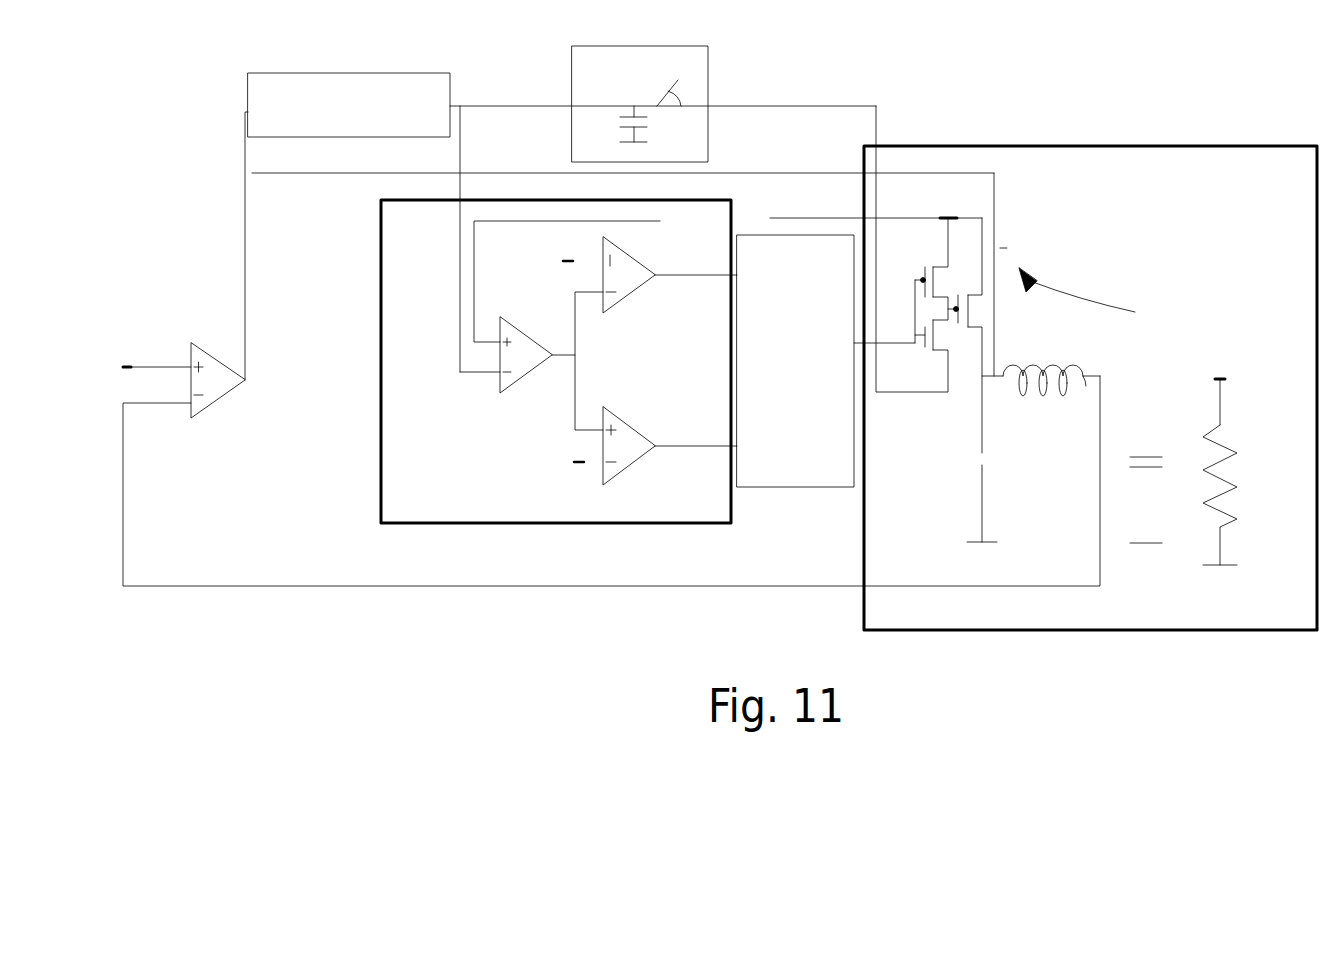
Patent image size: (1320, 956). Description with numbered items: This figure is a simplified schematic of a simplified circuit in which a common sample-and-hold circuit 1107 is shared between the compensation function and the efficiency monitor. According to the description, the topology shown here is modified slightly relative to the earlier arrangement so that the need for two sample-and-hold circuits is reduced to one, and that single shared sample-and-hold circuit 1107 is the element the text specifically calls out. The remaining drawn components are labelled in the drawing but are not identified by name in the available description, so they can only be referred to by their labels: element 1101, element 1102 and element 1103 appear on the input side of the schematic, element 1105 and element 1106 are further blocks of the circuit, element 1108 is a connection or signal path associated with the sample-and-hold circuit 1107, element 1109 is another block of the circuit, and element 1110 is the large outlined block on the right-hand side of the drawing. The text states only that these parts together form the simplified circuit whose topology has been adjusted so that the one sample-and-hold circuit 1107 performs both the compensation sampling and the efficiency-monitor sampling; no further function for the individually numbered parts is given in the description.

The reference voltage input 1101 is at (178, 366).
The feedback path 1102 is at (125, 452).
The operational amplifier 1103 is at (207, 350).
The window comparator block 1105 is at (410, 523).
The compensation block 1106 is at (313, 72).
The sample-and-hold circuit 1107 is at (708, 120).
The compensation output signal line 1108 is at (450, 122).
The digital duty cycle control 1109 is at (823, 487).
The power stage 1110 is at (1075, 146).